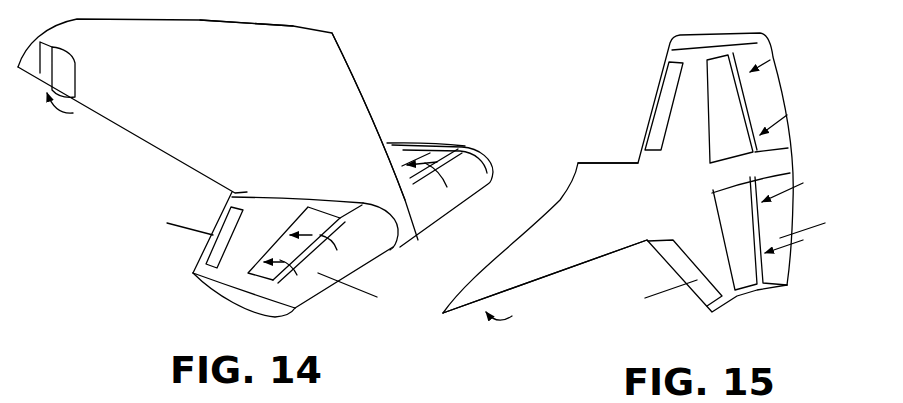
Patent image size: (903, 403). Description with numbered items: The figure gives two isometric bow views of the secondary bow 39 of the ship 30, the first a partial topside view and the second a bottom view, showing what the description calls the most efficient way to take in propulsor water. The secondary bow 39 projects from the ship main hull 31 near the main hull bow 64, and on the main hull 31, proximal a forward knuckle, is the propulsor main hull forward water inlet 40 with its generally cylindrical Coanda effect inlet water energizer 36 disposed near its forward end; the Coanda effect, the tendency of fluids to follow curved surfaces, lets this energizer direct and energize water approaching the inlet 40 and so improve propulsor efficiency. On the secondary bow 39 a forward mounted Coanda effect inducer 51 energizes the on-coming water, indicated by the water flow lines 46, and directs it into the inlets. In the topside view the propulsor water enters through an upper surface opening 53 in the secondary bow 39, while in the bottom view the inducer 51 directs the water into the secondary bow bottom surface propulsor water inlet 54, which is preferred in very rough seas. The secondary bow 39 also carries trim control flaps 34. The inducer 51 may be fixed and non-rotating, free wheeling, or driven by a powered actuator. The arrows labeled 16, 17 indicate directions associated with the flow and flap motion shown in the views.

In FIG. 14, the direction of insertion 16 is at (195, 202).
In FIG. 15, the direction of insertion 16 is at (808, 197).
In FIG. 14, the direction of insertion 17 is at (388, 267).
In FIG. 15, the direction of insertion 17 is at (650, 263).
In FIG. 14, the ship 30 is at (222, 66).
In FIG. 15, the ship 30 is at (609, 200).
In FIG. 14, the ship main hull 31 is at (285, 91).
In FIG. 15, the ship main hull 31 is at (584, 246).
In FIG. 14, the trim control flaps 34 is at (213, 255).
In FIG. 15, the trim control flaps 34 is at (658, 98).
In FIG. 14, the Coanda effect inlet water energizer 36 is at (70, 87).
In FIG. 15, the Coanda effect inlet water energizer 36 is at (503, 303).
In FIG. 14, the secondary bow 39 is at (404, 155).
In FIG. 15, the secondary bow 39 is at (696, 160).
In FIG. 14, the propulsor main hull forward water inlet 40 is at (50, 47).
In FIG. 14, the water flow lines 46 is at (312, 220).
In FIG. 15, the water flow lines 46 is at (783, 63).
In FIG. 14, the Coanda effect inducer 51 is at (376, 243).
In FIG. 15, the Coanda effect inducer 51 is at (762, 103).
In FIG. 14, the upper surface opening 53 is at (433, 157).
In FIG. 15, the secondary bow bottom surface propulsor water inlet 54 is at (747, 270).
In FIG. 14, the main hull bow 64 is at (358, 78).